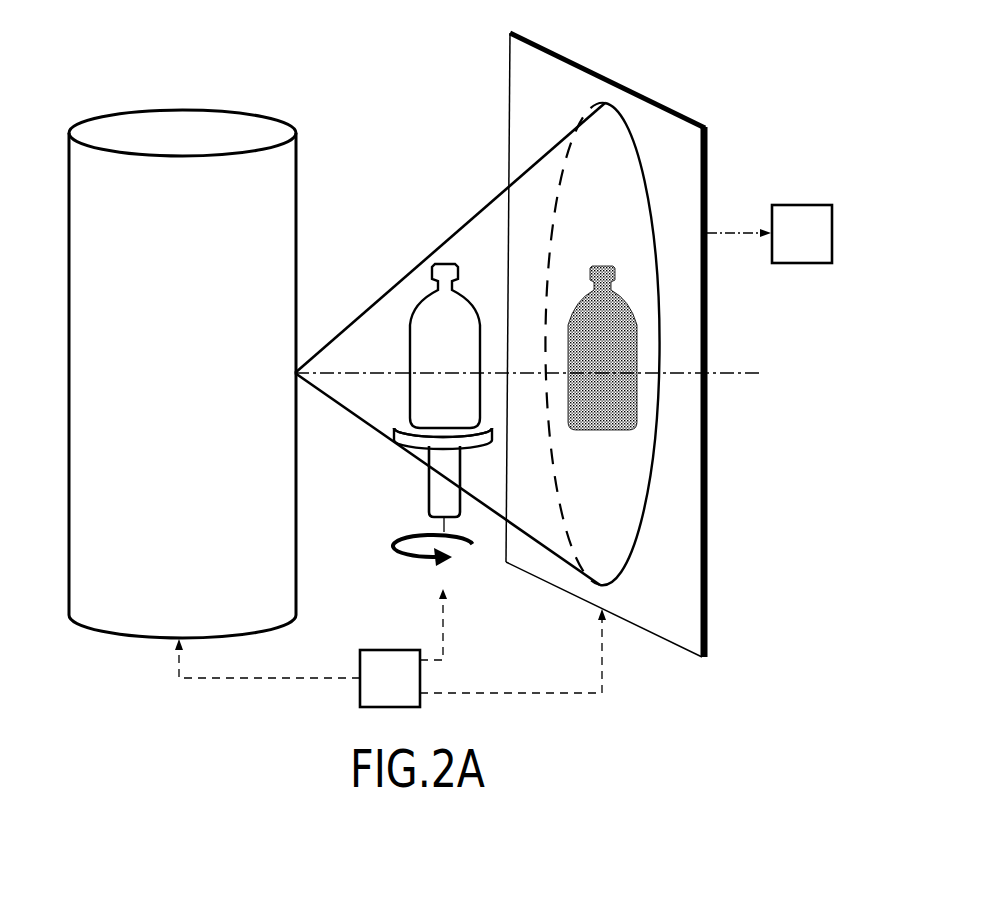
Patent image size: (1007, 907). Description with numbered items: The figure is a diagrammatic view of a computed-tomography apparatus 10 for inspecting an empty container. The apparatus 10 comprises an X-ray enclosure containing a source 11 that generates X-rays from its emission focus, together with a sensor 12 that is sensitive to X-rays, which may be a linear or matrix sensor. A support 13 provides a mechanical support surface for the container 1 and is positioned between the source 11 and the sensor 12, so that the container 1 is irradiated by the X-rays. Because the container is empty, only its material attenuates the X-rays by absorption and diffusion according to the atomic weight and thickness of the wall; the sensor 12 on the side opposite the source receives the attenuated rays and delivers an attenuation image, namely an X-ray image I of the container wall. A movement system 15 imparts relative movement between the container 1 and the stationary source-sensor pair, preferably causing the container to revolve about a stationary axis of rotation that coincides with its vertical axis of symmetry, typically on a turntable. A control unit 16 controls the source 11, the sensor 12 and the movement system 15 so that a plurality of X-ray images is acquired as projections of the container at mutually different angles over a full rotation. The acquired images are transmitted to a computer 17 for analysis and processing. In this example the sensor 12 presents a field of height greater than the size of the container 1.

The computed-tomography apparatus 10 is at (246, 72).
The source 11 is at (191, 375).
The sensor 12 is at (668, 630).
The container 1 is at (462, 300).
The X-ray image I is at (621, 302).
The support 13 is at (437, 494).
The movement system 15 is at (412, 562).
The control unit 16 is at (403, 694).
The computer 17 is at (815, 250).